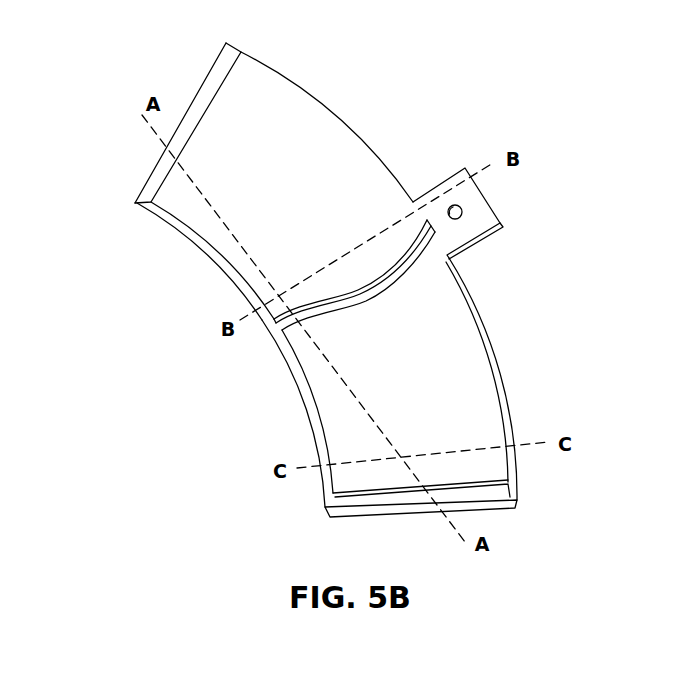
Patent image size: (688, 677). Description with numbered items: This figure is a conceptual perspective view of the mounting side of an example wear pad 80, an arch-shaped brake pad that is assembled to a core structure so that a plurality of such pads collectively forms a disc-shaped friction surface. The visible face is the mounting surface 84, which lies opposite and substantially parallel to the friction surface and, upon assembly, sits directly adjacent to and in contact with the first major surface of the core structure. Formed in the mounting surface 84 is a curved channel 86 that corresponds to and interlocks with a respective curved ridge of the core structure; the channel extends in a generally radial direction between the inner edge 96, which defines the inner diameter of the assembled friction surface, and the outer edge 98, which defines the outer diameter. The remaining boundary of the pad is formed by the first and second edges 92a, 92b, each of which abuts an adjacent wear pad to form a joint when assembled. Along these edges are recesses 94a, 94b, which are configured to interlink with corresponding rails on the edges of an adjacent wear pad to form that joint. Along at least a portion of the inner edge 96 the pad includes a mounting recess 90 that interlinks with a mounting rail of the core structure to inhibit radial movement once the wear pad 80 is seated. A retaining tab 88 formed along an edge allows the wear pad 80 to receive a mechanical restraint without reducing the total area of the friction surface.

The wear pad 80 is at (137, 50).
The mounting surface 84 is at (303, 165).
The curved channel 86 is at (390, 282).
The retaining tab 88 is at (478, 218).
The mounting recess 90 is at (172, 227).
The first edge 92a is at (198, 88).
The second edge 92b is at (408, 507).
The recess 94a is at (155, 162).
The recess 94b is at (490, 489).
The inner edge 96 is at (290, 358).
The outer edge 98 is at (365, 142).